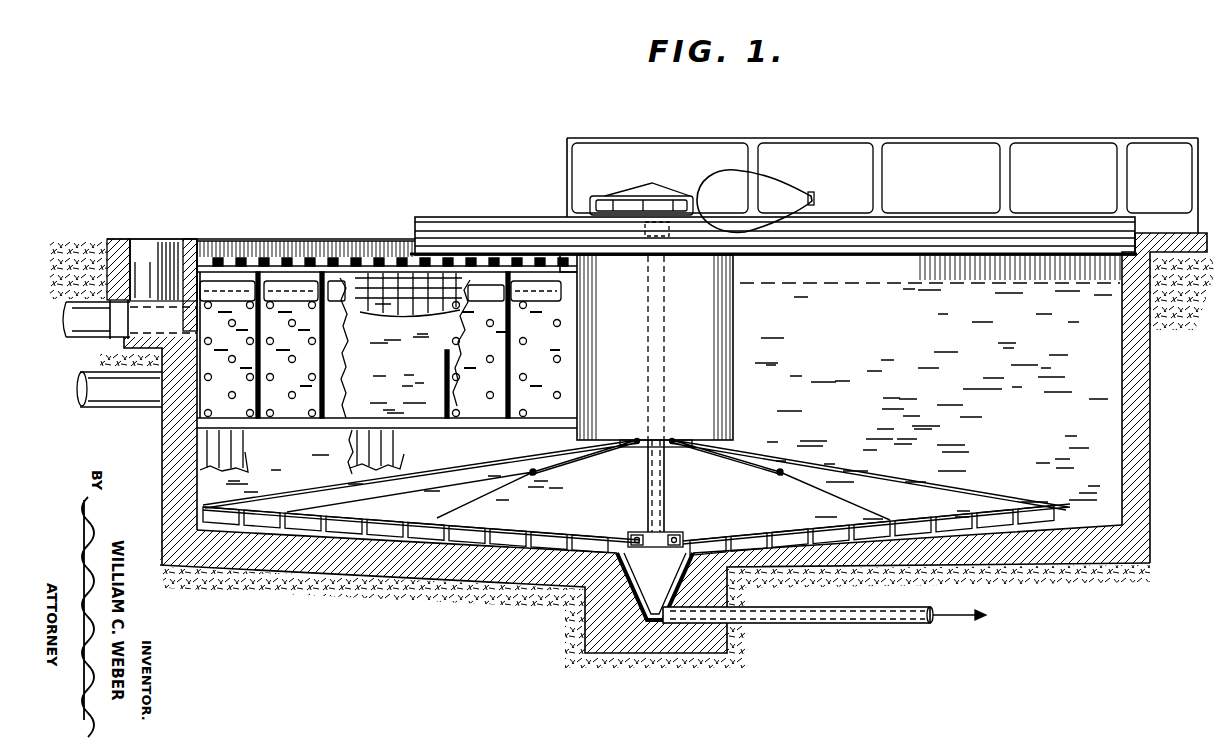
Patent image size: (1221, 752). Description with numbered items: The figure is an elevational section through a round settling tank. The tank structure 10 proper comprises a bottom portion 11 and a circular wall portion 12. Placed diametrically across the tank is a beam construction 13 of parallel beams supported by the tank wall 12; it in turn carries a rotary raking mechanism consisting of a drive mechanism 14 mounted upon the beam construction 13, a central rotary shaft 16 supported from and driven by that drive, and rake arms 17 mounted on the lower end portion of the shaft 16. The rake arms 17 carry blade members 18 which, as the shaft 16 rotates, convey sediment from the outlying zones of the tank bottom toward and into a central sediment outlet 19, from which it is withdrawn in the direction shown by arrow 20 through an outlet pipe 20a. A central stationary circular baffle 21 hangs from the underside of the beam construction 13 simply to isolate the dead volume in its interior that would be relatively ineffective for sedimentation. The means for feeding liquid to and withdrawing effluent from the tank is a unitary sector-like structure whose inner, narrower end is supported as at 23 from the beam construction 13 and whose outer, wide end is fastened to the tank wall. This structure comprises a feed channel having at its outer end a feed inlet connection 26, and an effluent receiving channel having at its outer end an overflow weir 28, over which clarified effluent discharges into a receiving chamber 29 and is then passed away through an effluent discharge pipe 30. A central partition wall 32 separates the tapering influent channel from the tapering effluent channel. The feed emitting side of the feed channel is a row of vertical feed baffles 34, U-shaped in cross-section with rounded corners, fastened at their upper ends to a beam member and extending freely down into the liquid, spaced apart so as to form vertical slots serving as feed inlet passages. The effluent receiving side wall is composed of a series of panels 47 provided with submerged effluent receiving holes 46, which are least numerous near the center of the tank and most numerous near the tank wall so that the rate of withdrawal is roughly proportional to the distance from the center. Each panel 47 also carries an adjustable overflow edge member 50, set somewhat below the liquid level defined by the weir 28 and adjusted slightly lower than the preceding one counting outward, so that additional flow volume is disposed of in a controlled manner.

The tank structure 10 is at (355, 226).
The bottom portion 11 is at (1037, 562).
The circular wall portion 12 is at (1148, 374).
The beam construction 13 is at (926, 209).
The drive mechanism 14 is at (705, 175).
The central rotary shaft 16 is at (661, 501).
The rake arms 17 is at (778, 540).
The blade members 18 is at (547, 543).
The central sediment outlet 19 is at (641, 603).
The arrow 20 is at (314, 434).
The outlet pipe 20a is at (877, 607).
The central stationary circular baffle 21 is at (740, 405).
The inner end support 23 is at (572, 263).
The feed inlet connection 26 is at (88, 396).
The overflow weir 28 is at (173, 240).
The receiving chamber 29 is at (146, 271).
The effluent discharge pipe 30 is at (64, 334).
The central partition wall 32 is at (405, 345).
The vertical feed baffles 34 is at (307, 258).
The effluent receiving passages or holes 46 is at (338, 411).
The panels 47 is at (530, 432).
The adjustable overflow edge member 50 is at (247, 302).